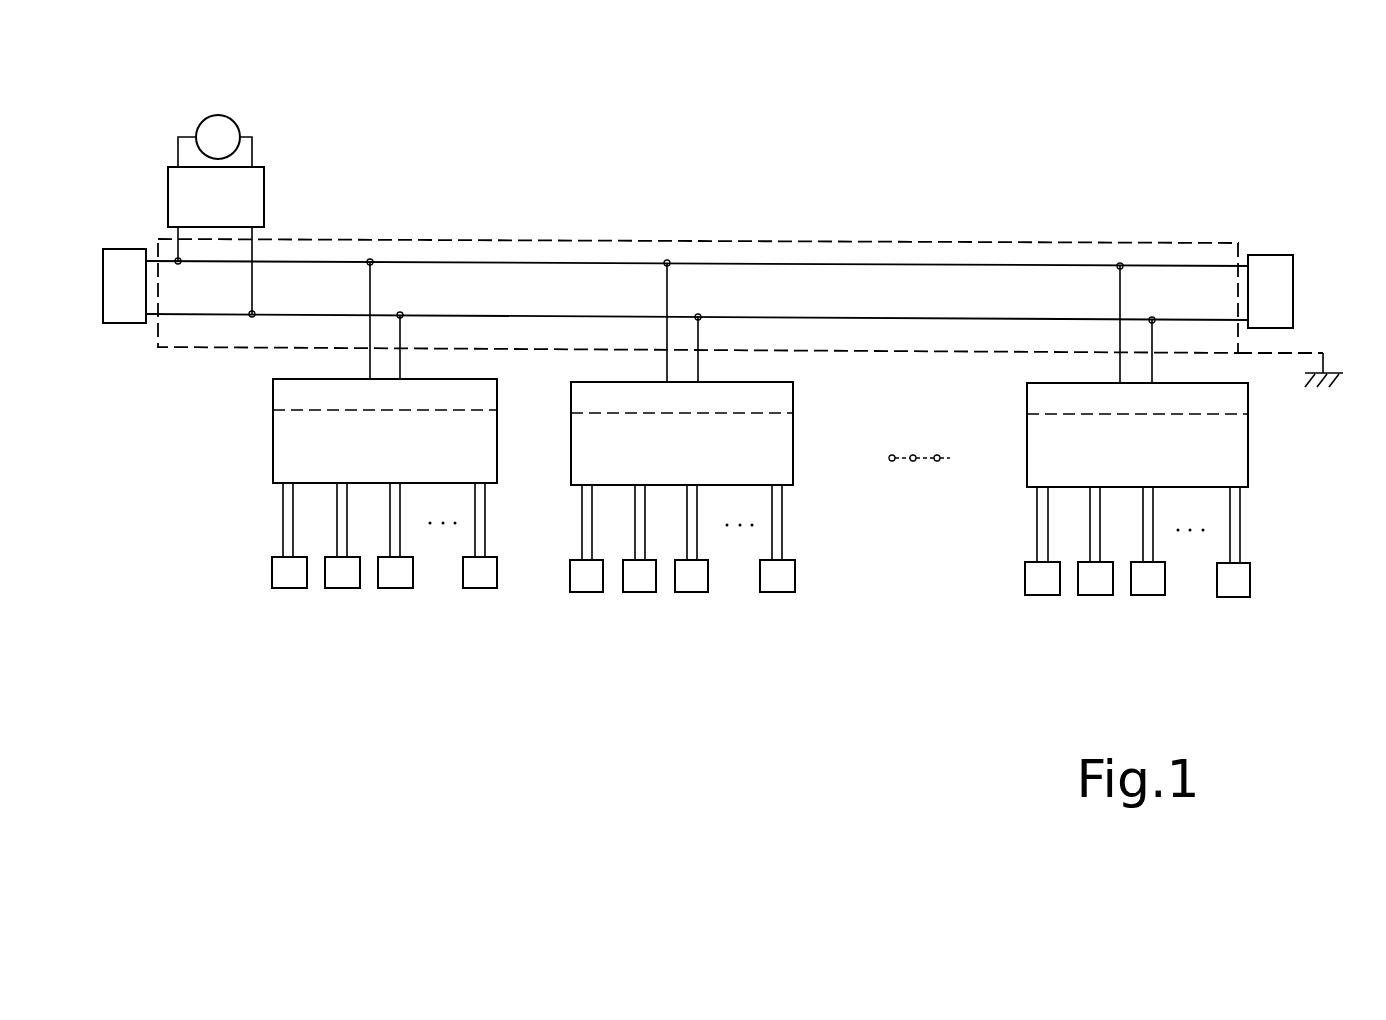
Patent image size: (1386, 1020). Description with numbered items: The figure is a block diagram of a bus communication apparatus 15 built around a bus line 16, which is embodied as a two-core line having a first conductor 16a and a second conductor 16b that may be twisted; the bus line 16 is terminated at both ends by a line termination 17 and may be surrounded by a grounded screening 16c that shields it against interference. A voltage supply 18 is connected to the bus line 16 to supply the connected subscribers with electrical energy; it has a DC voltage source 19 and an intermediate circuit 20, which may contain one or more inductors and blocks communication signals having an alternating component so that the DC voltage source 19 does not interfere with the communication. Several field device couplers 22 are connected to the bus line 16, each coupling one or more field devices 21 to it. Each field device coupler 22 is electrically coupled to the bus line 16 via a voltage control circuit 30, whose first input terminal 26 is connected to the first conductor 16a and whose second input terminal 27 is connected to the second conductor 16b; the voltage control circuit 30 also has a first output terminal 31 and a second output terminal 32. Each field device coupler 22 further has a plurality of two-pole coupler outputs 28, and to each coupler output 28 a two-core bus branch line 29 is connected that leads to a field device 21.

The bus communication apparatus 15 is at (1212, 160).
The bus line 16 is at (1060, 150).
The first conductor 16a is at (812, 263).
The second conductor 16b is at (903, 318).
The grounded screening 16c is at (1030, 243).
The line termination 17 is at (120, 325).
The voltage supply 18 is at (292, 128).
The DC voltage source 19 is at (216, 127).
The intermediate circuit 20 is at (252, 200).
The field device 21 is at (288, 574).
The field device coupler 22 is at (278, 437).
The first input terminal 26 is at (368, 378).
The second input terminal 27 is at (402, 378).
The coupler output 28 is at (288, 474).
The bus branch line 29 is at (322, 520).
The voltage control circuit 30 is at (280, 398).
The first output terminal 31 is at (737, 433).
The second output terminal 32 is at (262, 410).